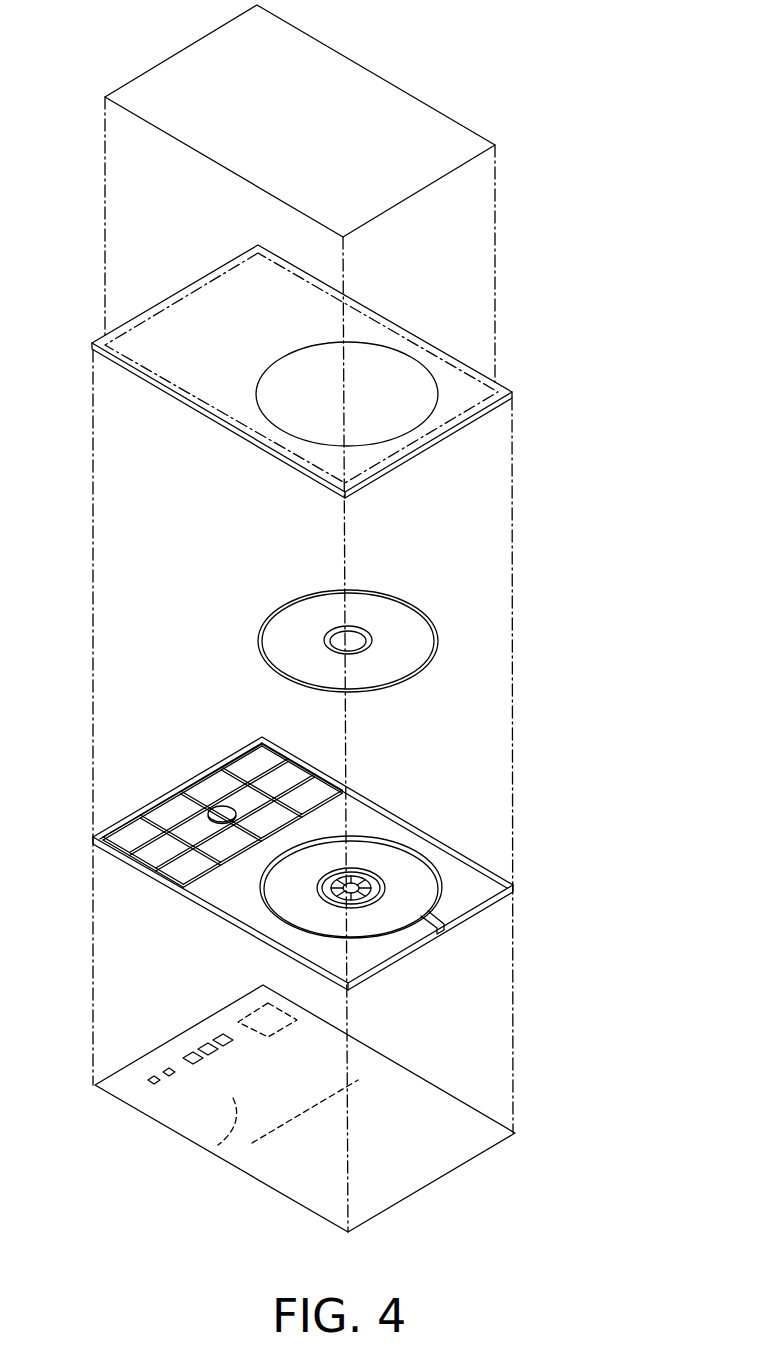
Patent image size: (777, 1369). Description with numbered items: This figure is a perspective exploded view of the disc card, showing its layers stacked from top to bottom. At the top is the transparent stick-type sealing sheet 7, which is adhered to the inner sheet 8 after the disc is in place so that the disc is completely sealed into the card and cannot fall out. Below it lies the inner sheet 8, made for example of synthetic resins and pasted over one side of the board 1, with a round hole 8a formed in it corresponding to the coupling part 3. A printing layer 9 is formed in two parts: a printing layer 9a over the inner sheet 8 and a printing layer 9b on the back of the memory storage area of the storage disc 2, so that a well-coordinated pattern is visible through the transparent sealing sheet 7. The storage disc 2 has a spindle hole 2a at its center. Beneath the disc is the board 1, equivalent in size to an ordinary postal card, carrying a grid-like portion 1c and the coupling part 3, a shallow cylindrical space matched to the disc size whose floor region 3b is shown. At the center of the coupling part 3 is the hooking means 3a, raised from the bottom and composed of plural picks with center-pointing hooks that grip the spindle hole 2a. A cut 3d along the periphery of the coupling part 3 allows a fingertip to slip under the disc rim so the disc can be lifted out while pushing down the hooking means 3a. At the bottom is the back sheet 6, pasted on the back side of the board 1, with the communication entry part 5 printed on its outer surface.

The board 1 is at (84, 840).
The grid rib portion of tray 1c is at (167, 812).
The storage disc 2 is at (250, 642).
The spindle hole 2a is at (338, 637).
The coupling part 3 is at (367, 855).
The hooking means 3a is at (373, 877).
The bottom surface of recess 3b is at (288, 907).
The cut 3d is at (425, 927).
The communication entry part 5 is at (220, 1150).
The back sheet 6 is at (162, 1132).
The transparent sealing sheet 7 is at (365, 70).
The inner sheet 8 is at (190, 286).
The round hole 8a is at (272, 424).
The printing layer 9 is at (577, 412).
The printing layer 9a is at (458, 402).
The printing layer 9b is at (413, 639).